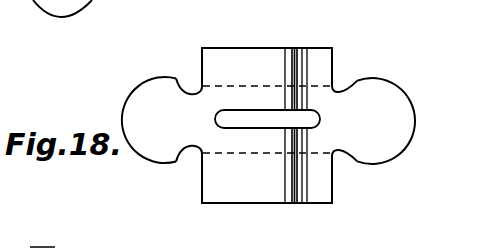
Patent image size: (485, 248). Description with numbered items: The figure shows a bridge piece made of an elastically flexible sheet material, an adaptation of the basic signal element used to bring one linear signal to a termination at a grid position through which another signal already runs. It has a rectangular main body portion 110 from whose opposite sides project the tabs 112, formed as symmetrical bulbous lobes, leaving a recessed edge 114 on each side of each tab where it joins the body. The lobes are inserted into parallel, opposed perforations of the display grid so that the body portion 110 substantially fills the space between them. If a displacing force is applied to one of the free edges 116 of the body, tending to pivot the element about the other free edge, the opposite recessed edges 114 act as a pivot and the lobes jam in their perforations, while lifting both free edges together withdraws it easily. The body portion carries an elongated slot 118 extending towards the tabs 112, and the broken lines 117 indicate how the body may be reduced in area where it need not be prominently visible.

The main body portion 110 is at (308, 188).
The tabs 112 is at (150, 96).
The recessed edge 114 is at (346, 90).
The free edges 116 is at (274, 48).
The broken lines 117 is at (237, 85).
The elongated slot 118 is at (291, 110).